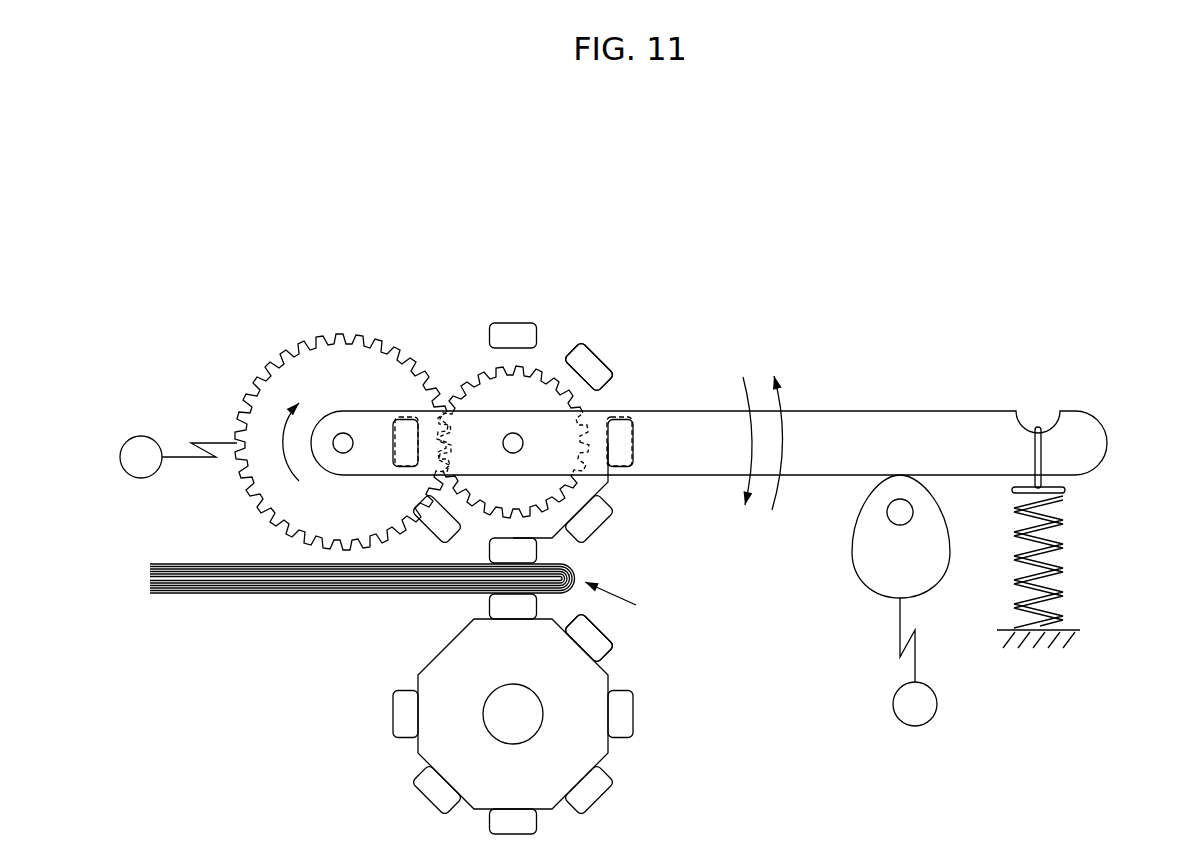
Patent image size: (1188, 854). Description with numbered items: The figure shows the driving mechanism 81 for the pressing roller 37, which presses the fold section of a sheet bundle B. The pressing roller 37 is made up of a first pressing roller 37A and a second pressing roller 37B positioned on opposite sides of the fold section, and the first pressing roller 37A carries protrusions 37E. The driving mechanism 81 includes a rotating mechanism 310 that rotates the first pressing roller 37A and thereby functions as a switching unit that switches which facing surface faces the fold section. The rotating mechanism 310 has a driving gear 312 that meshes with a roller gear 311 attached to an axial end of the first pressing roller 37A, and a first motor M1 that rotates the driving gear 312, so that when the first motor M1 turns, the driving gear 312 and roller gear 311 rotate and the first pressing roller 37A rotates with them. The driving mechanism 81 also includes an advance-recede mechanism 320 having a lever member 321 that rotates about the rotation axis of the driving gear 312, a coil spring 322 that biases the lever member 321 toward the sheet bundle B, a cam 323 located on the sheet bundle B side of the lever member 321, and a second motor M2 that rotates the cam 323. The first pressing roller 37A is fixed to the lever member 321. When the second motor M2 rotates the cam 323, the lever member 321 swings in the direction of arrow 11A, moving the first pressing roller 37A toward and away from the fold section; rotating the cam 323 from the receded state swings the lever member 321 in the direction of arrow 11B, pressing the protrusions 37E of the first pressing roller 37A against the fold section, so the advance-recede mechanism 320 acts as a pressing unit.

The driving mechanism 81 is at (992, 215).
The rotating mechanism 310 is at (418, 295).
The roller gear 311 is at (510, 368).
The driving gear 312 is at (336, 334).
The advance-recede mechanism 320 is at (848, 362).
The lever member 321 is at (955, 408).
The coil spring 322 is at (1066, 544).
The cam 323 is at (870, 594).
The pressing roller 37 is at (793, 568).
The first pressing roller 37A is at (617, 503).
The second pressing roller 37B is at (627, 670).
The protrusions 37E is at (594, 362).
The arrow 11A is at (776, 426).
The arrow 11B is at (739, 458).
The sheet bundle B is at (245, 595).
The first motor M1 is at (178, 457).
The second motor M2 is at (915, 704).